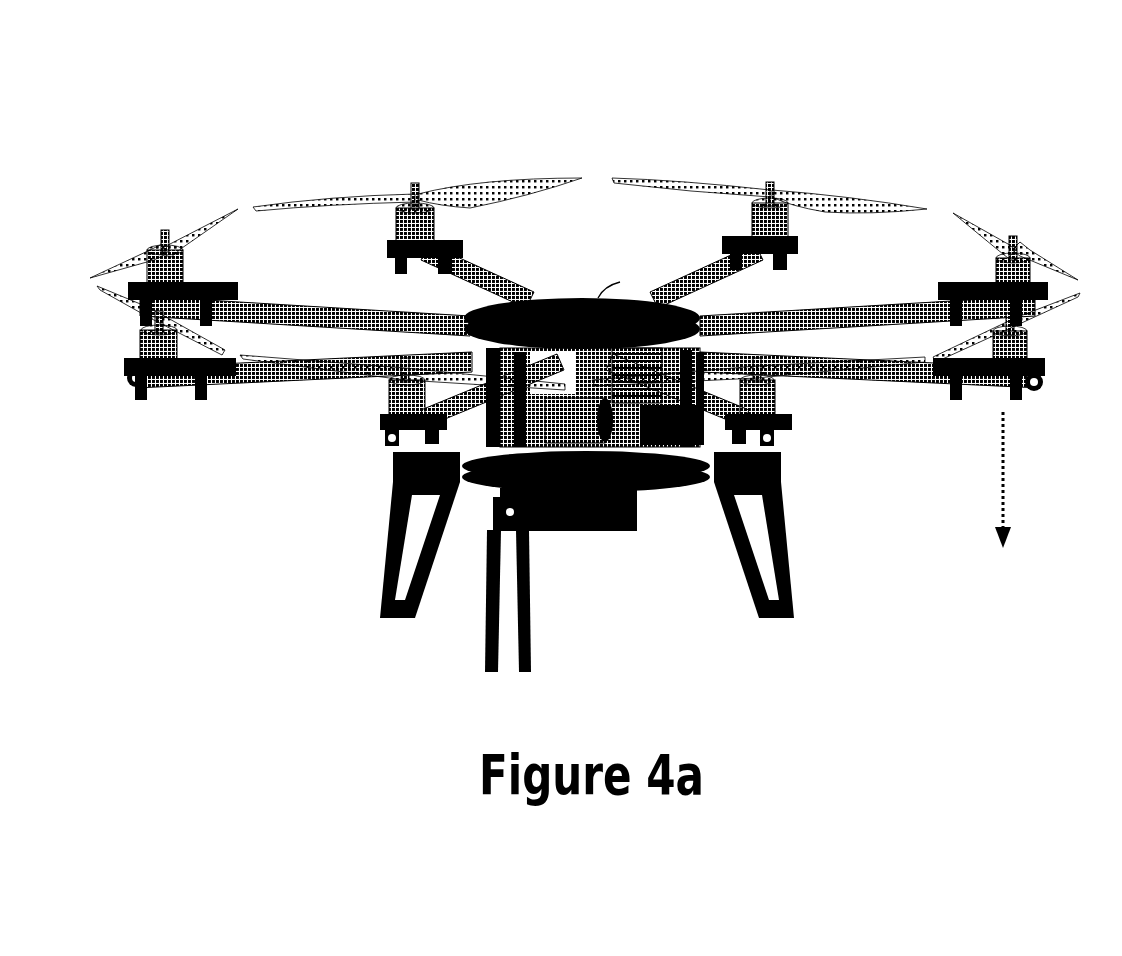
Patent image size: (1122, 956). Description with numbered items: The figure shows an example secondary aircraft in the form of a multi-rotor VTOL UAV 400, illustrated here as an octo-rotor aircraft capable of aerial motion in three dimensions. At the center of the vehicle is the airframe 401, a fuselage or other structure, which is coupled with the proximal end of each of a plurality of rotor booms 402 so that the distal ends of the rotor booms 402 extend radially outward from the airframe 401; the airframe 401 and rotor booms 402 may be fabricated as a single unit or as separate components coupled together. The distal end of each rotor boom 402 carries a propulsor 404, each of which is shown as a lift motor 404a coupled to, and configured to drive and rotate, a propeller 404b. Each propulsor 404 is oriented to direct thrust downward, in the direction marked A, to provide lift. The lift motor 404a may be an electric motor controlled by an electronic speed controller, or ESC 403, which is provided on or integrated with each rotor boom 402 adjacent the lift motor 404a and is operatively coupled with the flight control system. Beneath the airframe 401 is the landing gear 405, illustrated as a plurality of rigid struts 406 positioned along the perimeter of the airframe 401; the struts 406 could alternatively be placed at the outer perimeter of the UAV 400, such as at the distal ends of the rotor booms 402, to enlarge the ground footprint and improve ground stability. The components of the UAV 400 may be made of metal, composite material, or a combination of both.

The multi-rotor VTOL UAV 400 is at (1011, 84).
The airframe 401 is at (598, 300).
The rotor boom 402 is at (838, 308).
The electronic speed controller (ESC) 403 is at (962, 282).
The propulsor 404 is at (593, 135).
The lift motor 404a is at (435, 224).
The propeller 404b is at (522, 181).
The landing gear 405 is at (350, 453).
The strut 406 is at (785, 556).